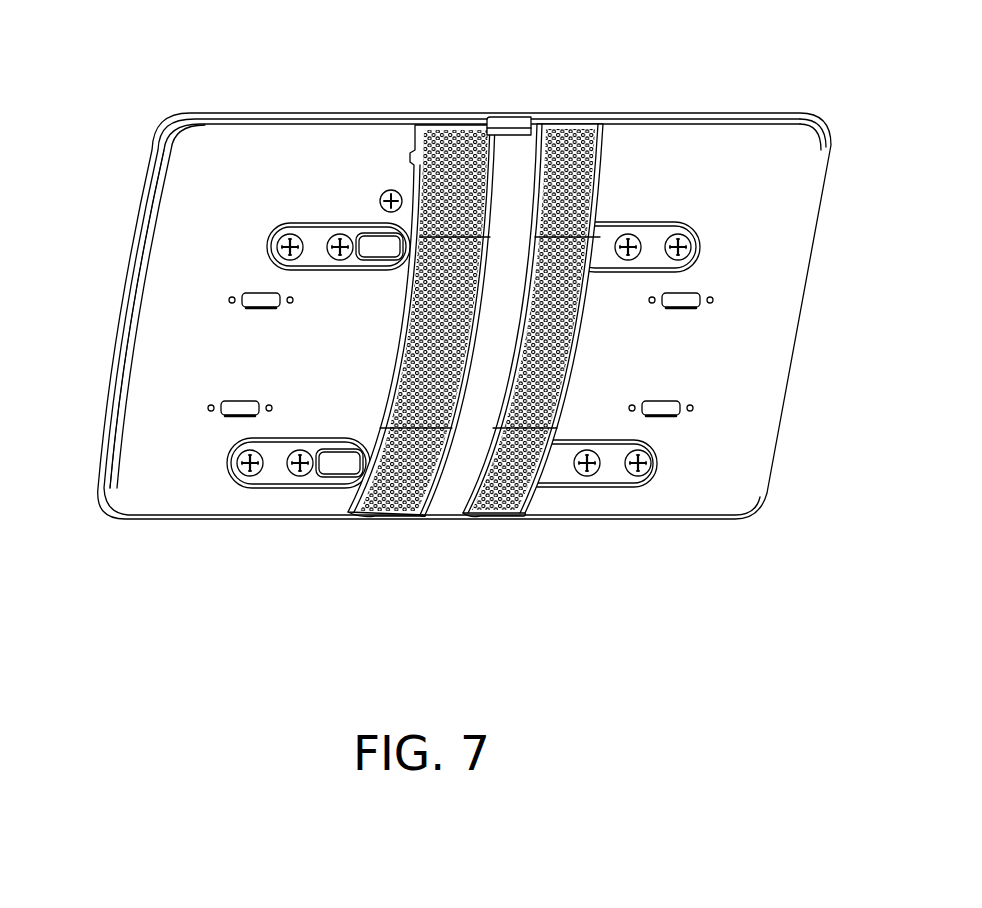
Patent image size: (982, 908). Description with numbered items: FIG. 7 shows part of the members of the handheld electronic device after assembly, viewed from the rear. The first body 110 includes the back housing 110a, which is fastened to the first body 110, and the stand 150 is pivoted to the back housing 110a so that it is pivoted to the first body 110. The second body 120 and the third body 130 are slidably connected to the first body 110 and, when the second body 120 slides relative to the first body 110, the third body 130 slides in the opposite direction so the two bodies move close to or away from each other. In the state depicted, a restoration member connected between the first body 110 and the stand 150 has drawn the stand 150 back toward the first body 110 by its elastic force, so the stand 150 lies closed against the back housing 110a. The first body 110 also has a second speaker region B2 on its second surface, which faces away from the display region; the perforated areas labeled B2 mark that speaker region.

The first body 110 is at (240, 113).
The back housing 110a is at (580, 134).
The second body 120 is at (768, 143).
The third body 130 is at (176, 217).
The stand 150 is at (517, 157).
The second speaker region B2 is at (408, 482).